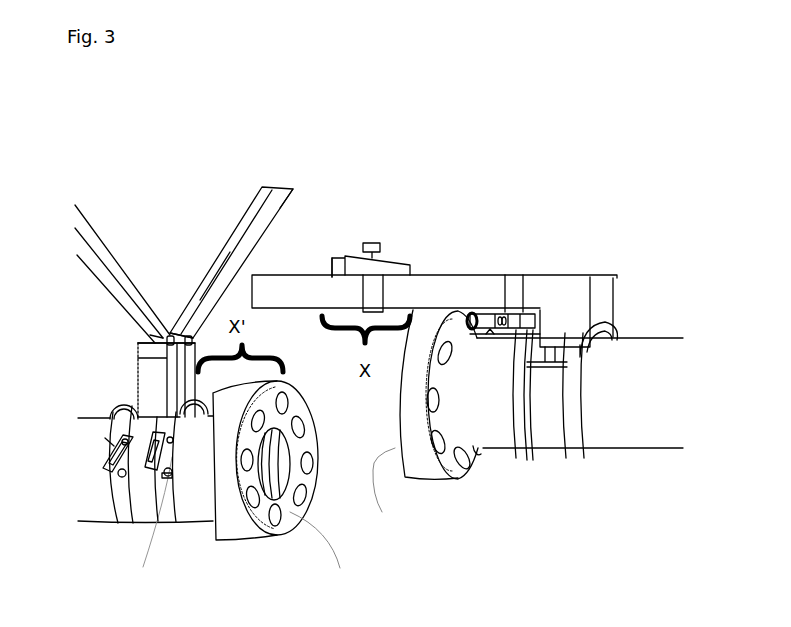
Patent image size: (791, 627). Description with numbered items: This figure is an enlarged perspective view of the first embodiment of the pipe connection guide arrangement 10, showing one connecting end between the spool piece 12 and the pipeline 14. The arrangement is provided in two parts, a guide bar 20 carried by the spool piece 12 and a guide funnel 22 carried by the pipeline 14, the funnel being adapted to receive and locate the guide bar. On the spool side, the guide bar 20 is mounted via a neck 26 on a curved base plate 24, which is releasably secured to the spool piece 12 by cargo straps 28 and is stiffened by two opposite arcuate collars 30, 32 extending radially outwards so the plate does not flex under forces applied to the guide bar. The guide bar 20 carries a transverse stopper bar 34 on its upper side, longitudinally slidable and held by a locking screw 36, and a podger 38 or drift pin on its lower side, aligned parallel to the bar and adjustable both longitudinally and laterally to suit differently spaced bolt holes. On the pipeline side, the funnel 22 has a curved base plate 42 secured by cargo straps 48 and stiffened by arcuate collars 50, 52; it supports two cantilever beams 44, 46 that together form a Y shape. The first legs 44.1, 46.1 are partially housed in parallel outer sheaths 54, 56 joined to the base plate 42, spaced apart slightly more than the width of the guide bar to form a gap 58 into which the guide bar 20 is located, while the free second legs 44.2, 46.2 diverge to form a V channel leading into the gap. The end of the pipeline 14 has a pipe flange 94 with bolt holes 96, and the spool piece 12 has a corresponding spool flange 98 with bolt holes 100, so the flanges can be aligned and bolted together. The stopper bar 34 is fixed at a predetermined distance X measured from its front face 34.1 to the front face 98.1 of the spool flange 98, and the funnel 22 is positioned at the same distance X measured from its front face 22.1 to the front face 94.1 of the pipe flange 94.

The pipe connection guide arrangement 10 is at (472, 117).
The spool piece 12 is at (643, 412).
The pipeline 14 is at (88, 502).
The guide bar 20 is at (427, 285).
The guide funnel 22 is at (199, 222).
The front face of the funnel 22.1 is at (288, 207).
The curved base plate 24 is at (557, 353).
The neck 26 is at (562, 326).
The cargo straps 28 is at (572, 440).
The arcuate collar 30 is at (512, 375).
The arcuate collar 32 is at (607, 327).
The stopper bar 34 is at (391, 268).
The front face of the stopper bar 34.1 is at (328, 264).
The locking screw 36 is at (377, 246).
The podger 38 is at (490, 313).
The curved base plate 42 is at (110, 428).
The cantilever beam 44 is at (94, 262).
The first leg 44.1 is at (152, 353).
The second leg 44.2 is at (97, 240).
The cantilever beam 46 is at (226, 229).
The first leg 46.1 is at (200, 348).
The second leg 46.2 is at (228, 248).
The cargo straps 48 is at (122, 508).
The arcuate collar 50 is at (115, 410).
The arcuate collar 52 is at (158, 498).
The outer sheath 54 is at (148, 392).
The outer sheath 56 is at (185, 375).
The gap 58 is at (166, 275).
The pipe flange 94 is at (265, 489).
The front face of the pipe flange 94.1 is at (332, 555).
The bolt holes 96 is at (278, 512).
The spool flange 98 is at (447, 427).
The front face of the spool flange 98.1 is at (380, 496).
The bolt holes 100 is at (460, 460).